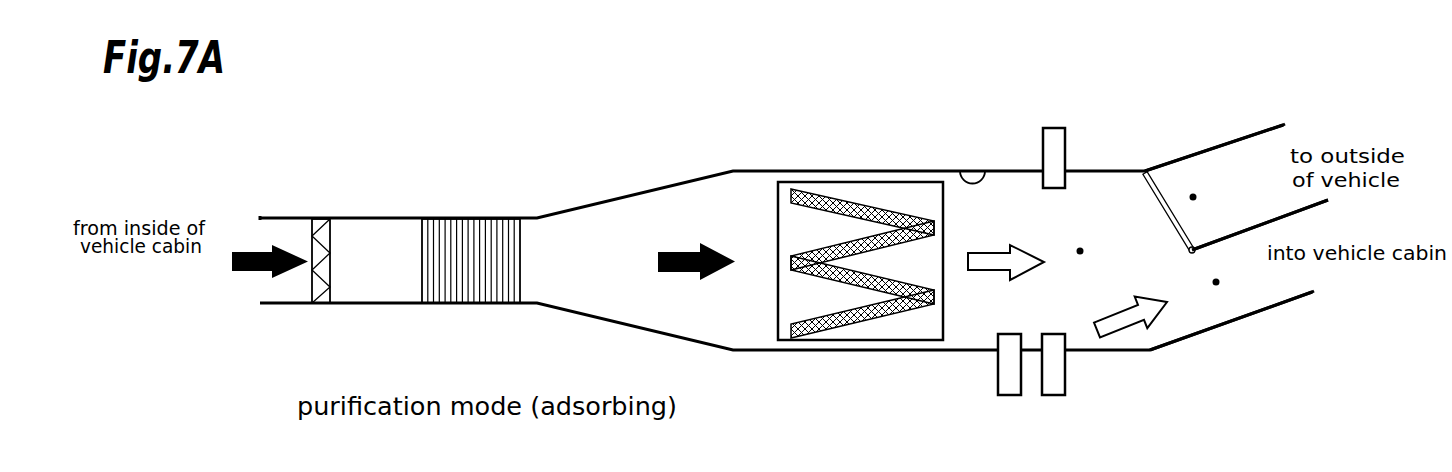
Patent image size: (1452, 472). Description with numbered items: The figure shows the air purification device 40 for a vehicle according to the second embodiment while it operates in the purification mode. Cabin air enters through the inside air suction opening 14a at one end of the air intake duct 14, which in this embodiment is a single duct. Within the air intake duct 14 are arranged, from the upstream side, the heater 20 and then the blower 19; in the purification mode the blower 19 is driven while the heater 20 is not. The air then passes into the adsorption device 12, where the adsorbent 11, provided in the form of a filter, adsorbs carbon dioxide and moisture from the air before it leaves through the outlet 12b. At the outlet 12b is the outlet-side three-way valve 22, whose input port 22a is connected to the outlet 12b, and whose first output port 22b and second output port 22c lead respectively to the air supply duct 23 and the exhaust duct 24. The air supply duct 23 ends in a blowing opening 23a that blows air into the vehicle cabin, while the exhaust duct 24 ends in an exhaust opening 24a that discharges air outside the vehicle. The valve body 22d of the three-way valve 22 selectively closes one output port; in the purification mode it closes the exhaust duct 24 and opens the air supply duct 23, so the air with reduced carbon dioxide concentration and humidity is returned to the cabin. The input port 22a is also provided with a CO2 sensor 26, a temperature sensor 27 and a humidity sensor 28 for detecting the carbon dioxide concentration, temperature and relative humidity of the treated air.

The adsorbent 11 is at (905, 215).
The adsorption device 12 is at (860, 170).
The outlet 12b is at (985, 170).
The air intake duct 14 is at (540, 212).
The inside air suction opening 14a is at (260, 220).
The blower 19 is at (476, 235).
The heater 20 is at (318, 218).
The outlet-side three-way valve 22 is at (1125, 168).
The input port 22a is at (1080, 248).
The first output port 22b is at (1216, 285).
The second output port 22c is at (1193, 195).
The valve body 22d is at (1168, 214).
The air supply duct 23 is at (1263, 312).
The blowing opening 23a is at (1313, 292).
The exhaust duct 24 is at (1236, 140).
The exhaust opening 24a is at (1284, 125).
The CO2 sensor 26 is at (1052, 135).
The temperature sensor 27 is at (1010, 386).
The humidity sensor 28 is at (1053, 386).
The air purification device 40 is at (1010, 78).